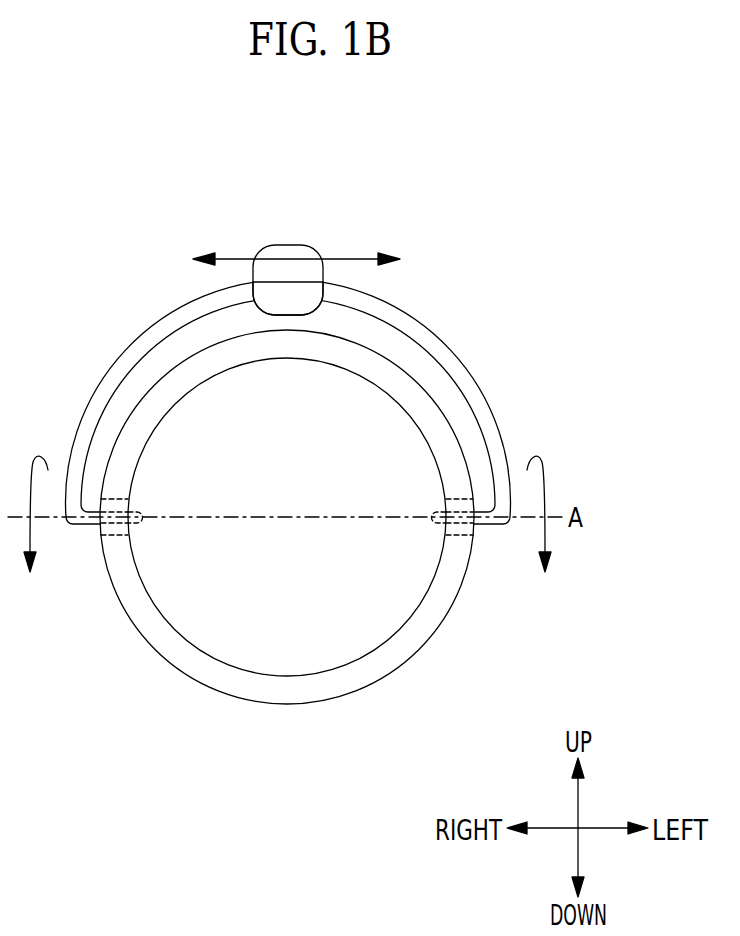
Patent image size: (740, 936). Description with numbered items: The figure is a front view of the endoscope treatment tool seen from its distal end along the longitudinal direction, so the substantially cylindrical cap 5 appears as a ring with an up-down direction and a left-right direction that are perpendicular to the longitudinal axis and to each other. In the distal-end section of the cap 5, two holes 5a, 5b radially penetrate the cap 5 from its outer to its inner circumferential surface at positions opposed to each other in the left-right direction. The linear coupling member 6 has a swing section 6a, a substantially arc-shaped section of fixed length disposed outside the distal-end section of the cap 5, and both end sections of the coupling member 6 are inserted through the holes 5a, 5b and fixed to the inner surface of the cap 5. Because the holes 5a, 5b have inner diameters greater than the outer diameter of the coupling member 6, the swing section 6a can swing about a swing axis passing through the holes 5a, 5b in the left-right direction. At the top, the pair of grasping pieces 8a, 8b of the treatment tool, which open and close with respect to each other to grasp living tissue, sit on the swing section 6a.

The cap 5 is at (283, 704).
The hole 5a is at (100, 529).
The hole 5b is at (474, 529).
The coupling member 6 is at (89, 339).
The swing section 6a is at (157, 318).
The grasping piece 8a is at (281, 245).
The grasping piece 8b is at (312, 315).